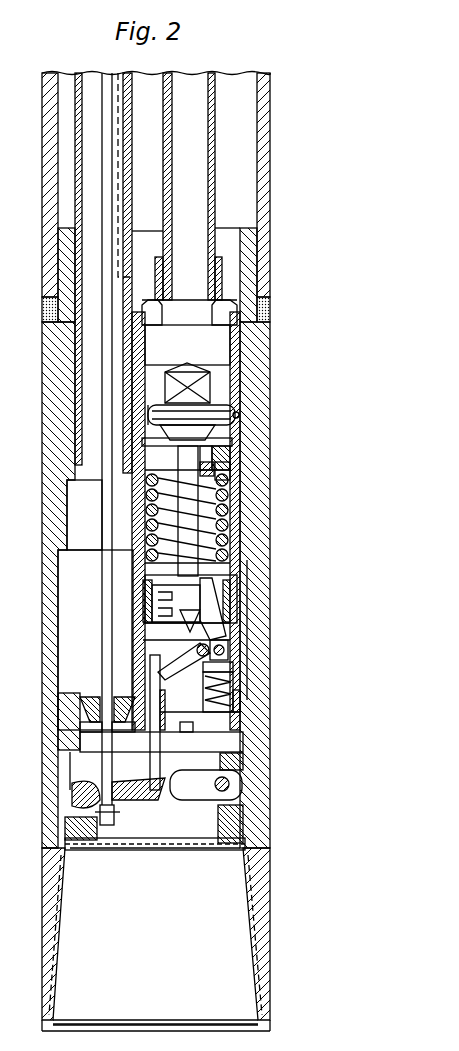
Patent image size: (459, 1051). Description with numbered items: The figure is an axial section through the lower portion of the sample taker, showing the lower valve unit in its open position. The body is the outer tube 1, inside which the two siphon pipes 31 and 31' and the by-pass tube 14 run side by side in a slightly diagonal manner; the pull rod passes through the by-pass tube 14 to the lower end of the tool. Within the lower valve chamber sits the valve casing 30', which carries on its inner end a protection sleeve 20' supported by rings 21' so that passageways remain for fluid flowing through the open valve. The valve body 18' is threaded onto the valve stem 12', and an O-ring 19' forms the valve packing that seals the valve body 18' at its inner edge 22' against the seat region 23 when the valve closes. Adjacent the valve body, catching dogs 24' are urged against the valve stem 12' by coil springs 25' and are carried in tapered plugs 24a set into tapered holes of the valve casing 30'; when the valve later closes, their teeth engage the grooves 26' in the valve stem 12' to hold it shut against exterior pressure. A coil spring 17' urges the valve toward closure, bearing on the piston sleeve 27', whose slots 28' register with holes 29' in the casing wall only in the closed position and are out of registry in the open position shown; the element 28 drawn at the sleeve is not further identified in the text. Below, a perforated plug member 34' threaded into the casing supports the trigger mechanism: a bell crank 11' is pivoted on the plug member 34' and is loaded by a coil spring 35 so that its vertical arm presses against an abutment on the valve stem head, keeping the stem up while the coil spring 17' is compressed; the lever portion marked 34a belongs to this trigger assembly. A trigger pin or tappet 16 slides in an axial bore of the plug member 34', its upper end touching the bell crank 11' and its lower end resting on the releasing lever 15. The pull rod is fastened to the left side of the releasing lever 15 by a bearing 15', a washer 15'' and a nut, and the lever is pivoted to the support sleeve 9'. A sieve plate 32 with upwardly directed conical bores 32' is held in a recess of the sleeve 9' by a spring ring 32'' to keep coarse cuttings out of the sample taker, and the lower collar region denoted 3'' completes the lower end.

The outer tube 1 is at (263, 128).
The bottom sleeve 3'' is at (133, 998).
The by-pass tube 14 is at (77, 142).
The siphon pipe 31 is at (223, 186).
The siphon pipe 31' is at (219, 194).
The valve body 18' is at (234, 383).
The rings 21' is at (225, 401).
The protection sleeve 20' is at (157, 418).
The O-ring 19' is at (116, 407).
The inner edge 22' is at (267, 417).
The plate 23 is at (142, 439).
The valve stem 12' is at (240, 511).
The grooves 26' is at (122, 508).
The catching dogs 24' is at (251, 450).
The tapered plugs 24a is at (228, 452).
The coil springs 25' is at (259, 471).
The coil spring 17' is at (224, 516).
The slots 28' is at (223, 599).
The valve body 28 is at (176, 603).
The piston sleeve 27' is at (241, 609).
The holes 29' is at (97, 640).
The valve casing 30' is at (152, 521).
The bell crank 11' is at (223, 631).
The lever 34a is at (197, 648).
The coil spring 35 is at (243, 683).
The plug member 34' is at (170, 722).
The trigger pin 16 is at (157, 764).
The releasing lever 15 is at (53, 794).
The bearing 15' is at (142, 796).
The washer 15'' is at (125, 819).
The support sleeve 9' is at (262, 798).
The sieve plate 32 is at (155, 856).
The conical bores 32' is at (155, 858).
The spring ring 32'' is at (155, 889).